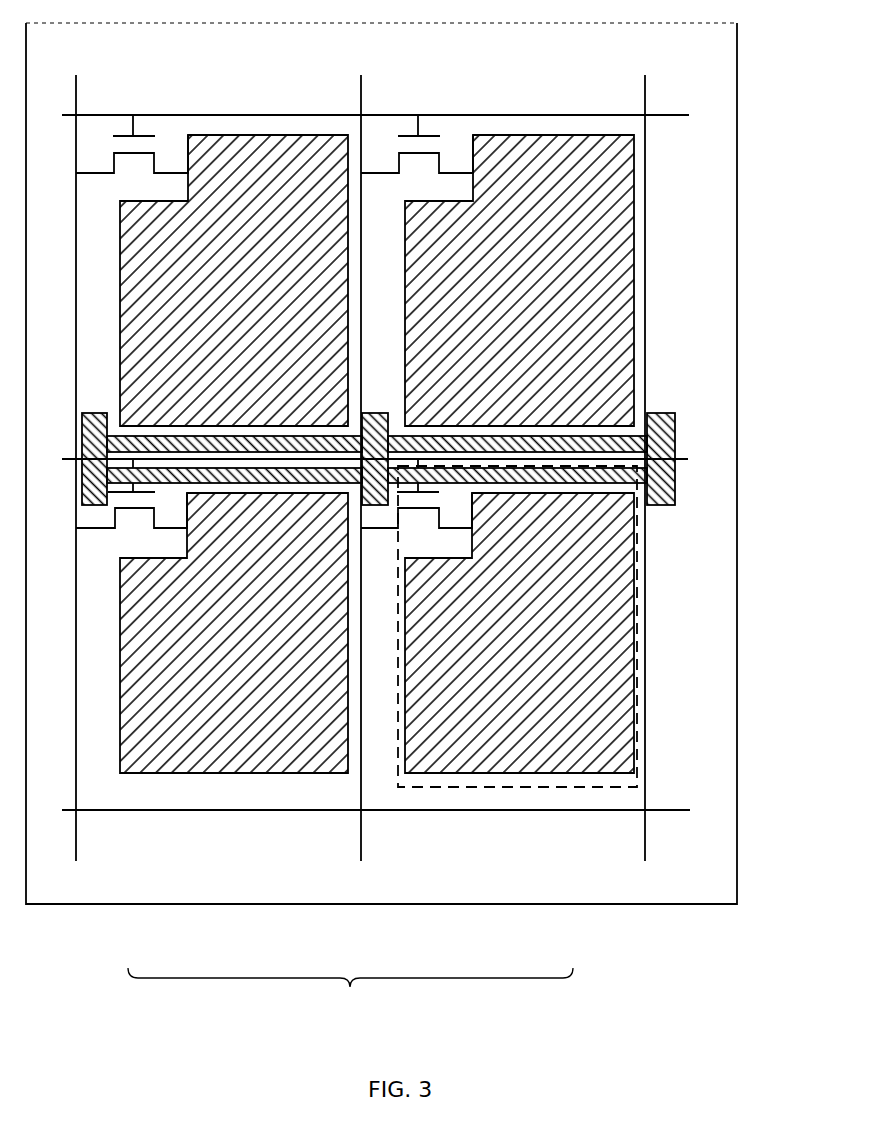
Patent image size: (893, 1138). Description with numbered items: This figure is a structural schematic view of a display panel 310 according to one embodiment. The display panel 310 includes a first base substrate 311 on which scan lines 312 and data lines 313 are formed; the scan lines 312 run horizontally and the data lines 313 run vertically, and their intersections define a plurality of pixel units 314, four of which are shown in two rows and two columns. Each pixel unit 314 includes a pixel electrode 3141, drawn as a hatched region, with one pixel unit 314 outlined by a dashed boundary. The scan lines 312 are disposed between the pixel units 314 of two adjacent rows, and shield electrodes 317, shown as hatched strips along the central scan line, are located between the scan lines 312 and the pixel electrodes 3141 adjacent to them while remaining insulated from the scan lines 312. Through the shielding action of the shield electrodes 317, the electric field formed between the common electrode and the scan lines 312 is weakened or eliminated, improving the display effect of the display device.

The display panel 310 is at (350, 995).
The first base substrate 311 is at (150, 873).
The scan lines 312 is at (193, 810).
The data lines 313 is at (361, 837).
The pixel unit 314 is at (472, 787).
The pixel electrode 3141 is at (543, 773).
The shield electrodes 317 is at (618, 437).